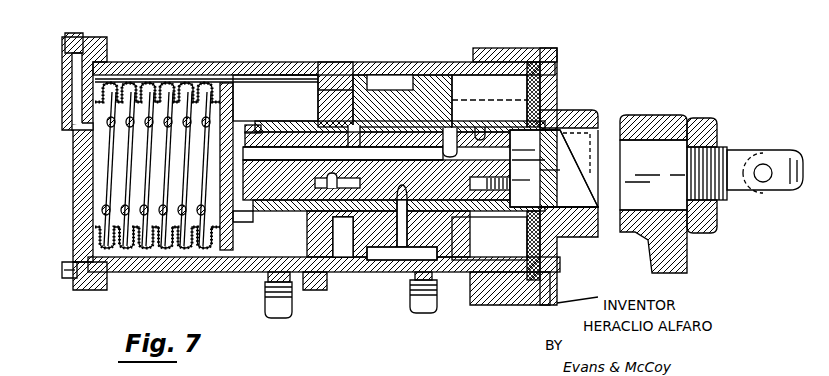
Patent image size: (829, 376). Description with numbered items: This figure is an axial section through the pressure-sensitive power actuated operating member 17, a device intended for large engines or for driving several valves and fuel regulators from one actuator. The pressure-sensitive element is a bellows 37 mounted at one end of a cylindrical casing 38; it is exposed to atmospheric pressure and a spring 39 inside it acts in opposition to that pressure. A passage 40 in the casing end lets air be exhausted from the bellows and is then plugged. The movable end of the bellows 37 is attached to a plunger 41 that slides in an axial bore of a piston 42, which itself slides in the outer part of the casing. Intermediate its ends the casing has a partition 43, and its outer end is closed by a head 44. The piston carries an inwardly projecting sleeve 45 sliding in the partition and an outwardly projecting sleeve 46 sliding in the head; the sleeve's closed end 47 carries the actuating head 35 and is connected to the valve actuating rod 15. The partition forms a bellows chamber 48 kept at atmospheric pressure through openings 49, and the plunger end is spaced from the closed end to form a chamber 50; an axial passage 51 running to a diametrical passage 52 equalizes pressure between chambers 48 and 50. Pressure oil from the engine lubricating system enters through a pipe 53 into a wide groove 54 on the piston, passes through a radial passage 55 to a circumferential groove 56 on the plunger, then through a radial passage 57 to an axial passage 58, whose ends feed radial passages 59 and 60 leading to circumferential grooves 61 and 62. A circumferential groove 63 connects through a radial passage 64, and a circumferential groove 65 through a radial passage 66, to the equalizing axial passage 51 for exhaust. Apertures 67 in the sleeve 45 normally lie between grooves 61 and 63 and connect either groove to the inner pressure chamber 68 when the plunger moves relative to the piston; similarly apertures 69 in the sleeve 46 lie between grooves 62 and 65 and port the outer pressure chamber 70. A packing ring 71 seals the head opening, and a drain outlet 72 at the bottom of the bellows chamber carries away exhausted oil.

The valve actuating rod 15 is at (787, 167).
The pressure-sensitive power actuated operating member 17 is at (390, 63).
The actuating head 35 is at (688, 258).
The bellows 37 is at (167, 90).
The casing 38 is at (220, 62).
The spring 39 is at (108, 192).
The passage 40 is at (77, 104).
The plunger 41 is at (272, 186).
The piston 42 is at (413, 78).
The partition 43 is at (320, 93).
The head 44 is at (558, 100).
The inwardly projecting sleeve 45 is at (277, 127).
The outwardly projecting sleeve 46 is at (572, 210).
The closed end 47 is at (612, 133).
The bellows chamber 48 is at (263, 75).
The openings 49 is at (282, 67).
The chamber 50 is at (550, 190).
The axial passage 51 is at (554, 168).
The diametrical passage 52 is at (235, 212).
The pipe 53 is at (440, 310).
The wide groove 54 is at (392, 260).
The radial passage 55 is at (407, 228).
The circumferential groove 56 is at (410, 121).
The radial passage 57 is at (408, 173).
The axial passage 58 is at (355, 173).
The radial passage 59 is at (315, 183).
The radial passage 60 is at (478, 177).
The circumferential groove 61 is at (350, 125).
The circumferential groove 62 is at (480, 130).
The circumferential groove 63 is at (399, 228).
The radial passage 64 is at (358, 135).
The circumferential groove 65 is at (455, 125).
The radial passage 66 is at (448, 140).
The apertures 67 is at (348, 120).
The inner pressure chamber 68 is at (347, 78).
The apertures 69 is at (465, 128).
The outer pressure chamber 70 is at (515, 83).
The packing ring 71 is at (527, 230).
The drain outlet 72 is at (285, 271).